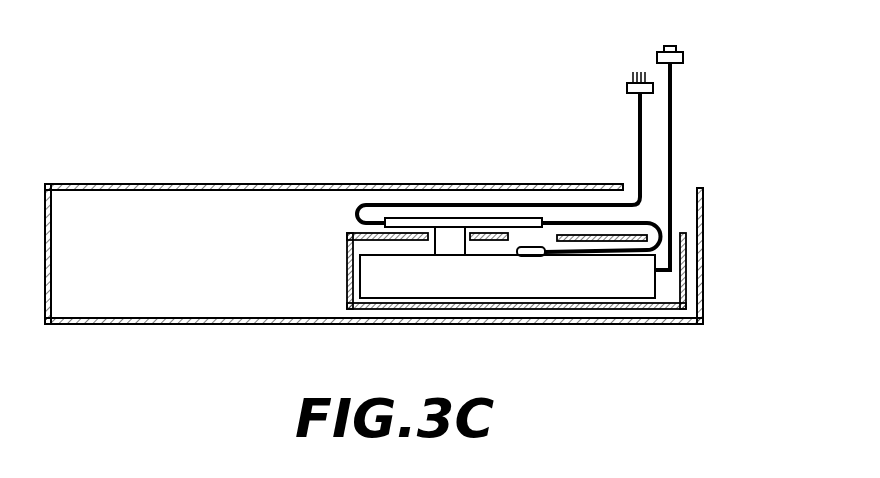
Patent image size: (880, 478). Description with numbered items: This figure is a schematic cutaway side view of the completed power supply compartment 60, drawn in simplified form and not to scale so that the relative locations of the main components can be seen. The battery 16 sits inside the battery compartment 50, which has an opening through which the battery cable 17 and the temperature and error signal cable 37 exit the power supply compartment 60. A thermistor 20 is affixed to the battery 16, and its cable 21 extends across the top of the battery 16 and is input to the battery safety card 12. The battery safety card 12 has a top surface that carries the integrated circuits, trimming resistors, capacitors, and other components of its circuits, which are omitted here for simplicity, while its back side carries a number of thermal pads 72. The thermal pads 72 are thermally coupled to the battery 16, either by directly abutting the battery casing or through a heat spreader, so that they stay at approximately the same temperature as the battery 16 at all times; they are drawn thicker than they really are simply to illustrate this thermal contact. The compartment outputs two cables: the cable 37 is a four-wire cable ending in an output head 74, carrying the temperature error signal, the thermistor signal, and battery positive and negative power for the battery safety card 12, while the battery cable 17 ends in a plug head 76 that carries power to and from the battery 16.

The power supply compartment 60 is at (196, 150).
The battery compartment 50 is at (347, 288).
The battery 16 is at (625, 282).
The thermal pads 72 is at (449, 245).
The battery safety card 12 is at (427, 222).
The thermistor 20 is at (531, 256).
The cable 21 is at (598, 253).
The temperature and error signal cable 37 is at (640, 111).
The output head 74 is at (627, 88).
The battery cable 17 is at (670, 125).
The plug head 76 is at (683, 57).